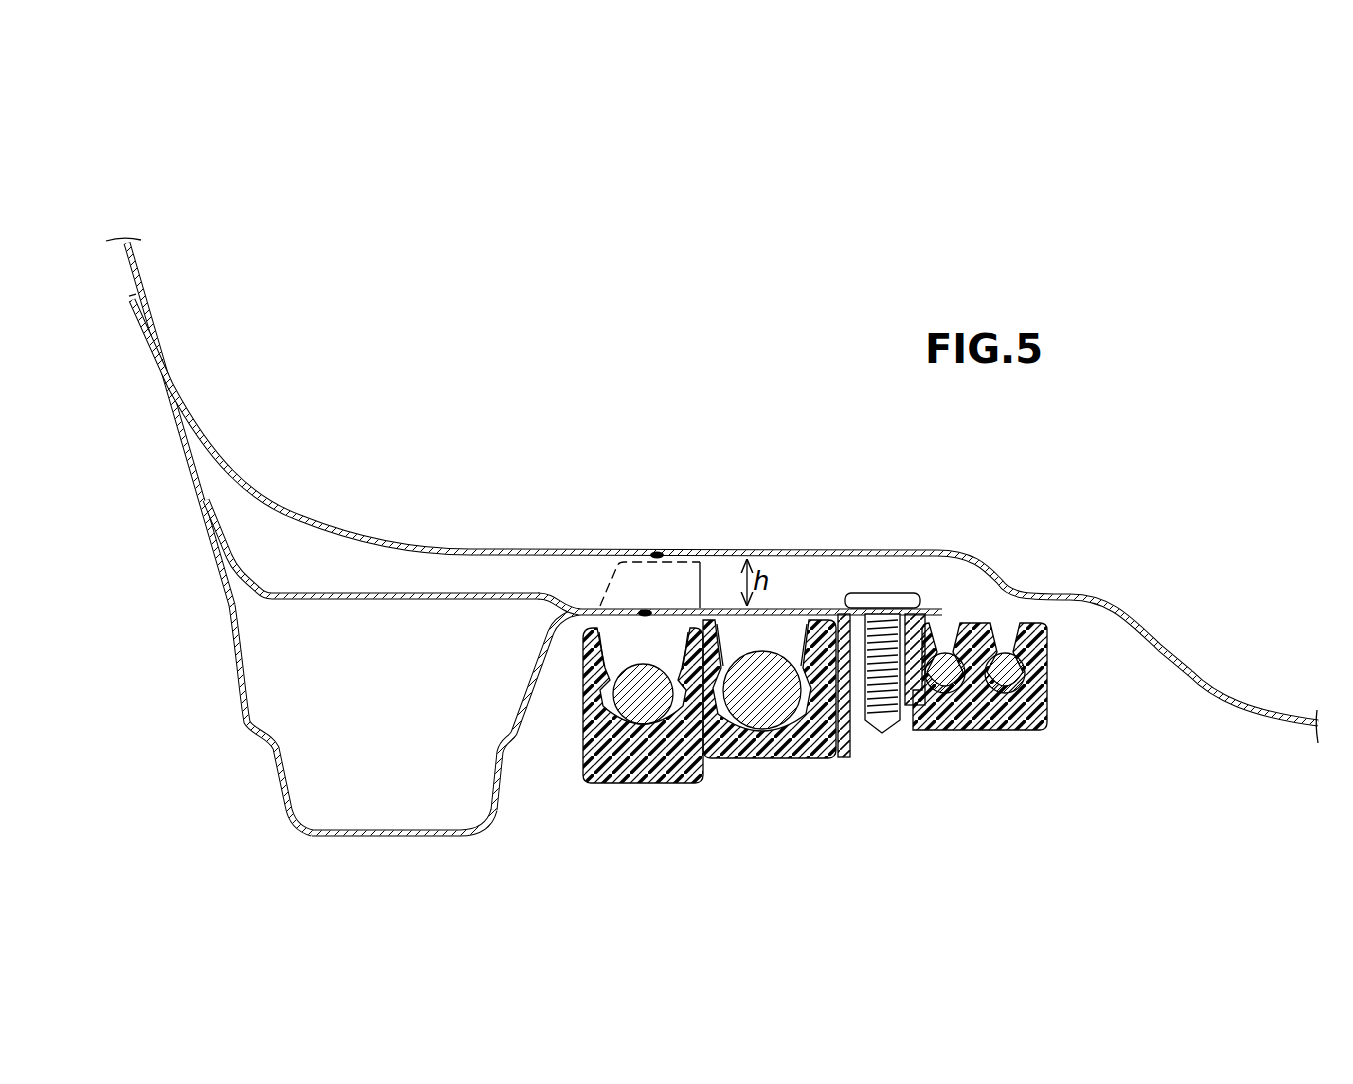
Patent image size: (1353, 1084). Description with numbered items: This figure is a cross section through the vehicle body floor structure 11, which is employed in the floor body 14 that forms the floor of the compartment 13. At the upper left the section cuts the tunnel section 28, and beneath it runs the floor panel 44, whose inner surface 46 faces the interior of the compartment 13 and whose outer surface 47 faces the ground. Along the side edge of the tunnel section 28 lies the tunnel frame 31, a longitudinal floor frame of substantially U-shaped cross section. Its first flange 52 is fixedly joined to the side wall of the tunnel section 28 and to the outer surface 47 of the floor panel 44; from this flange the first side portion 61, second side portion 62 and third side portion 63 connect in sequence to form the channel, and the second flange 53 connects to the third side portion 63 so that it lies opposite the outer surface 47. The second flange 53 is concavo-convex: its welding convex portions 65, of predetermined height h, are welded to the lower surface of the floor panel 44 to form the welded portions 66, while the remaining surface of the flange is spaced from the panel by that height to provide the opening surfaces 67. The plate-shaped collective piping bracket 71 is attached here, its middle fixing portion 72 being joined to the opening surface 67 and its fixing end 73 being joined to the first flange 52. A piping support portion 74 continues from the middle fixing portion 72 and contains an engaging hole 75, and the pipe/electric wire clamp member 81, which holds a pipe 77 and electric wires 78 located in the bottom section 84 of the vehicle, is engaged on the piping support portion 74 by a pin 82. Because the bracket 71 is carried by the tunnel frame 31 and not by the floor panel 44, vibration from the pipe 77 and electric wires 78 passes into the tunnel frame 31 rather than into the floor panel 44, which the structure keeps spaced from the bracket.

The vehicle body floor structure 11 is at (305, 220).
The compartment 13 is at (496, 230).
The floor body 14 is at (615, 310).
The tunnel section 28 is at (110, 208).
The tunnel frame 31 is at (296, 840).
The floor panel 44 is at (833, 550).
The inner surface 46 is at (1112, 600).
The outer surface 47 is at (1205, 688).
The first flange 52 is at (183, 466).
The second flange 53 is at (646, 724).
The first side portion 61 is at (240, 698).
The second side portion 62 is at (383, 838).
The third side portion 63 is at (528, 682).
The welding convex portion 65 is at (583, 603).
The welded portion 66 is at (656, 552).
The opening surface 67 is at (678, 614).
The collective piping bracket 71 is at (372, 592).
The middle fixing portion 72 is at (590, 605).
The fixing end 73 is at (223, 543).
The piping support portion 74 is at (810, 611).
The engaging hole 75 is at (878, 612).
The pipe 77 is at (762, 650).
The electric wires 78 is at (997, 633).
The pipe/electric wire clamp member 81 is at (793, 760).
The pin 82 is at (900, 607).
The bottom section 84 is at (1087, 762).